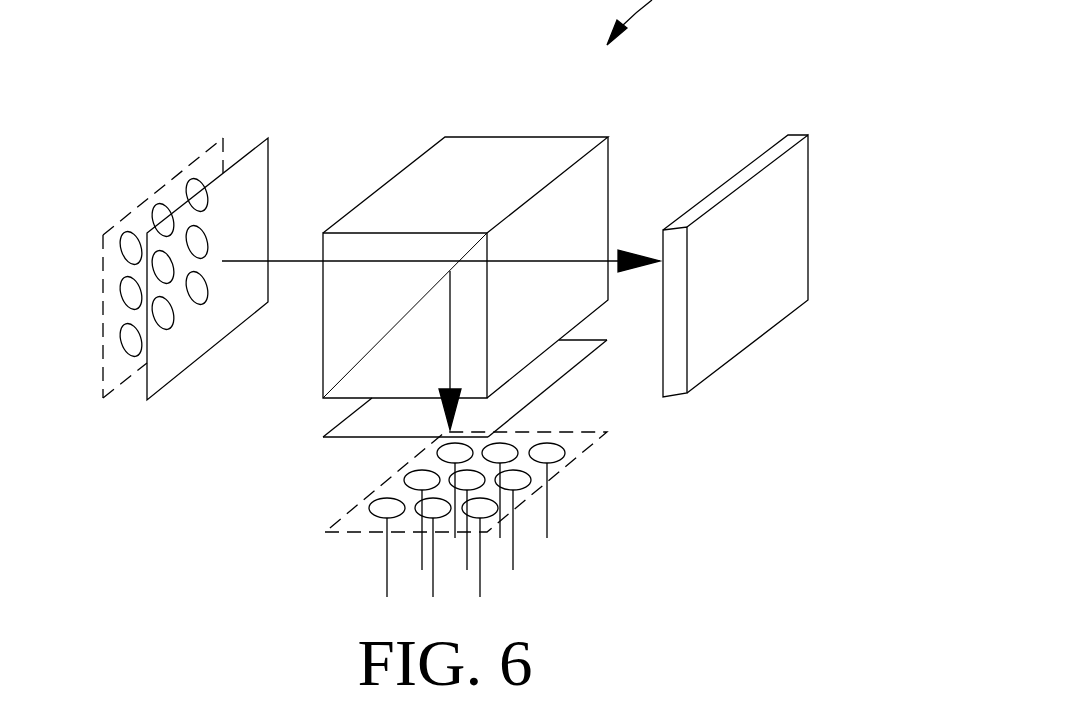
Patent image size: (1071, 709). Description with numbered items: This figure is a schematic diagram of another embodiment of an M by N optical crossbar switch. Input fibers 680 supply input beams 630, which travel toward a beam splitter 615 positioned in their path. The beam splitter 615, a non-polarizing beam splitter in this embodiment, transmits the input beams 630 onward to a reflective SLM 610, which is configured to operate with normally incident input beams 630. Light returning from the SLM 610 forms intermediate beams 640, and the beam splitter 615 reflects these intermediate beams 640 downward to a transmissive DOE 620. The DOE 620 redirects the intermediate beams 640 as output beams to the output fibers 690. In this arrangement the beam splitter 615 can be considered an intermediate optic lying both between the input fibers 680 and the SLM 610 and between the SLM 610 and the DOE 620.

The reflective SLM 610 is at (795, 130).
The beam splitter 615 is at (495, 158).
The transmissive DOE 620 is at (337, 426).
The input beams 630 is at (292, 277).
The intermediate beams 640 is at (450, 342).
The input fibers 680 is at (163, 187).
The output fibers 690 is at (348, 512).